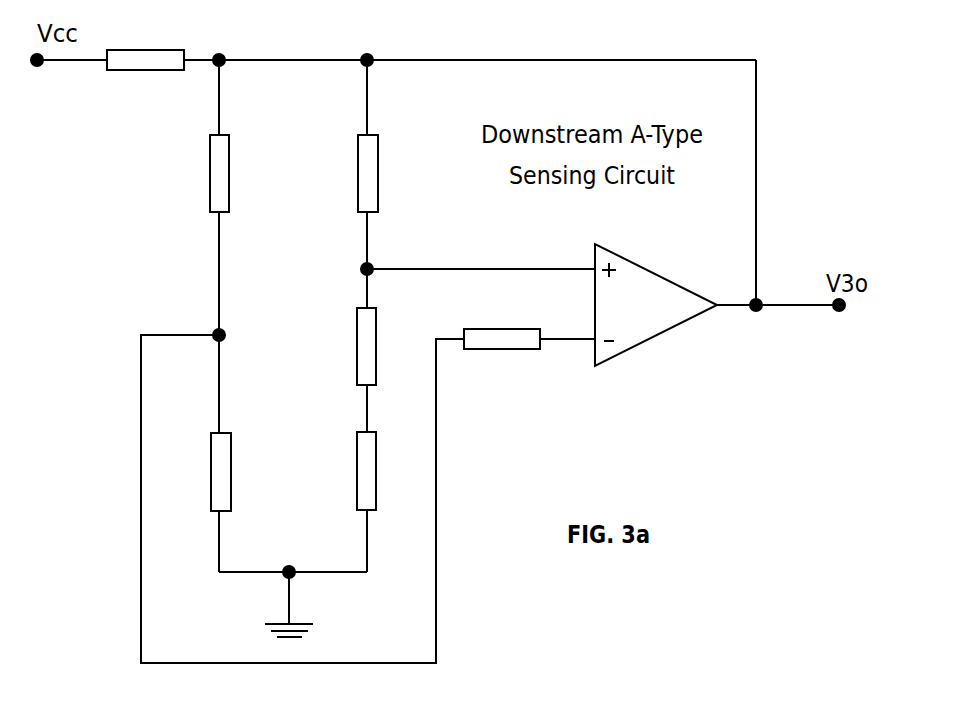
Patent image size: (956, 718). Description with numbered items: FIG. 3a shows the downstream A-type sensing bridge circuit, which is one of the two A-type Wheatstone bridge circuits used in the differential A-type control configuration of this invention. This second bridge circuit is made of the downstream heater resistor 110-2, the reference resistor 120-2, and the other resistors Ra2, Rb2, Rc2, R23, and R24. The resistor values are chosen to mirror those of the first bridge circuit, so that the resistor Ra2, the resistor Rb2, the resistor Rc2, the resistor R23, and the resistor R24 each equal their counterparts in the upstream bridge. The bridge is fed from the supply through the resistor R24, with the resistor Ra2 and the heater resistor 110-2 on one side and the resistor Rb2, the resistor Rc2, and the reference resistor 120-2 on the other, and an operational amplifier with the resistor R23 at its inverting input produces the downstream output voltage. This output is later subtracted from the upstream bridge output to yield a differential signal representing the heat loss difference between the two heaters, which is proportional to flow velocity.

The heater resistor Rh2 110-2 is at (199, 450).
The reference resistor Rr2 120-2 is at (388, 450).
The resistor R24 is at (145, 86).
The resistor Ra2 is at (193, 173).
The resistor Rb2 is at (395, 173).
The resistor Rc2 is at (390, 346).
The resistor R23 is at (502, 363).